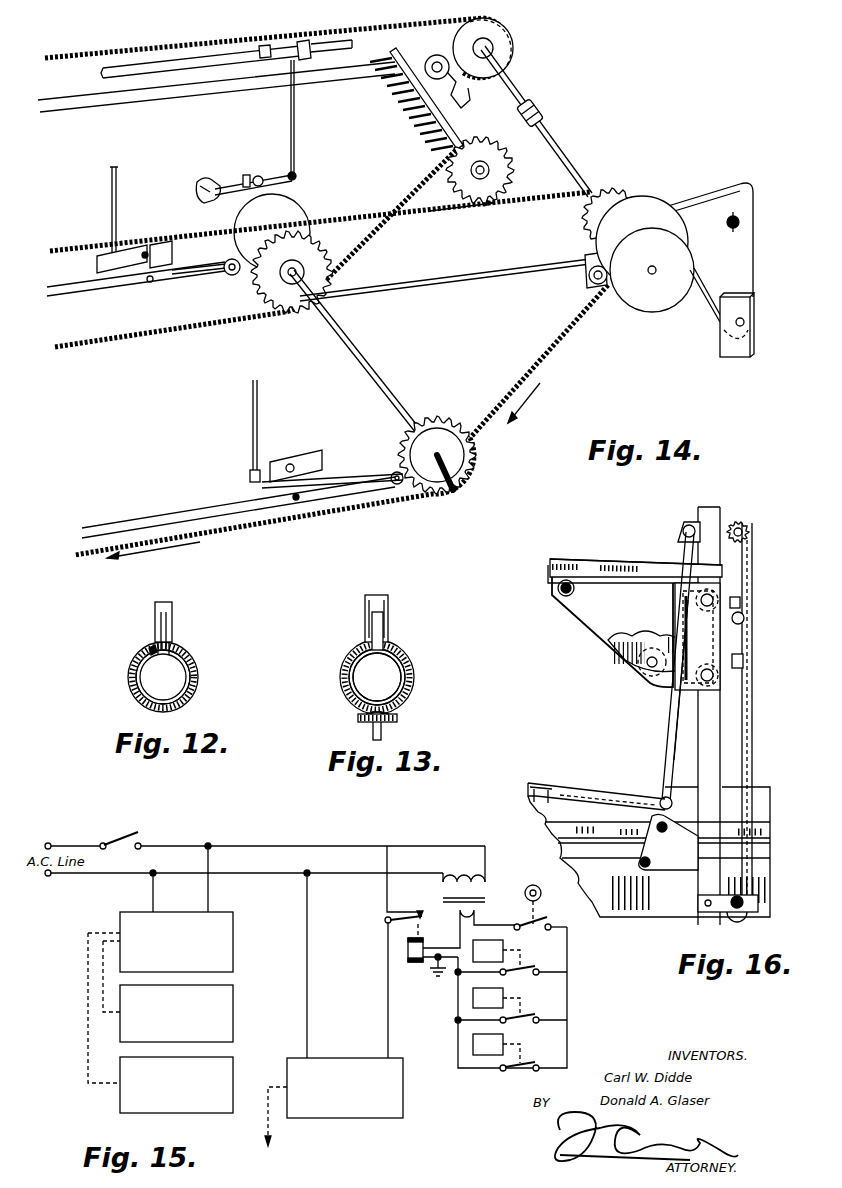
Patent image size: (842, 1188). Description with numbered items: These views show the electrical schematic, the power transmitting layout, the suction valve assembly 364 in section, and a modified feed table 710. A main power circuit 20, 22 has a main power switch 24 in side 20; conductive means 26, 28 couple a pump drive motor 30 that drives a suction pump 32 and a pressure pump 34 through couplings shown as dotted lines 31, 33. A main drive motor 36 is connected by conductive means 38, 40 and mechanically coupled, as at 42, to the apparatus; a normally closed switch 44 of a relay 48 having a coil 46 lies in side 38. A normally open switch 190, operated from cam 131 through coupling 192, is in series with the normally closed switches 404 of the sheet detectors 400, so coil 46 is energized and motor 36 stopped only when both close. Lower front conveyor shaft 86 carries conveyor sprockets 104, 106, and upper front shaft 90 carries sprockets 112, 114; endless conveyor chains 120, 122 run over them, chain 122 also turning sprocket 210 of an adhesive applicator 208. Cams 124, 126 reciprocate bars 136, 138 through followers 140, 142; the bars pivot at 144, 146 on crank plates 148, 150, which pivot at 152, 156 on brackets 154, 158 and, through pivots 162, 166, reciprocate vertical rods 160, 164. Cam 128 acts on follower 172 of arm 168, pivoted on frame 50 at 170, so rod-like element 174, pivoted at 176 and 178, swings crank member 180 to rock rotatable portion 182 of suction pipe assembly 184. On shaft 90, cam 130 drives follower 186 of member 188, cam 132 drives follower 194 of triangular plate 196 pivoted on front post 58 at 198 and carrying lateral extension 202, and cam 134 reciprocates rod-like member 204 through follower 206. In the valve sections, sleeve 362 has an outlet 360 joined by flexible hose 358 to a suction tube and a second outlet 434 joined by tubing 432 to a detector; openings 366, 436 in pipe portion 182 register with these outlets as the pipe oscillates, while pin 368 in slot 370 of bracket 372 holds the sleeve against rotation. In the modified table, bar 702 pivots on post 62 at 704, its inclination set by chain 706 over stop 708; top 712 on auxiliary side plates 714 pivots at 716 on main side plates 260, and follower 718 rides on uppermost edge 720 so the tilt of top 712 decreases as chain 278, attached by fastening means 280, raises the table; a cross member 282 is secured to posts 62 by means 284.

In FIG. 15, the main power circuit side 20 is at (243, 846).
In FIG. 15, the main power circuit side 22 is at (262, 876).
In FIG. 15, the main power switch 24 is at (115, 838).
In FIG. 15, the conductive means 26 is at (208, 891).
In FIG. 15, the conductive means 28 is at (153, 891).
In FIG. 15, the pump drive motor 30 is at (233, 945).
In FIG. 15, the dotted line 31 is at (100, 968).
In FIG. 15, the suction pump 32 is at (233, 1015).
In FIG. 15, the dotted line 33 is at (85, 1041).
In FIG. 15, the pressure pump 34 is at (233, 1085).
In FIG. 15, the main drive motor 36 is at (403, 1088).
In FIG. 15, the conductive means 38 is at (388, 963).
In FIG. 15, the conductive means 40 is at (307, 969).
In FIG. 15, the mechanical coupling 42 is at (265, 1121).
In FIG. 15, the normally closed switch 44 is at (404, 891).
In FIG. 15, the relay coil 46 is at (421, 945).
In FIG. 15, the relay 48 is at (426, 960).
In FIG. 14, the frame 50 is at (200, 184).
In FIG. 16, the frame 50 is at (770, 792).
In FIG. 14, the front post 58 is at (720, 349).
In FIG. 16, the post 62 is at (700, 517).
In FIG. 14, the lower front conveyor shaft 86 is at (362, 355).
In FIG. 14, the upper front shaft 90 is at (565, 152).
In FIG. 14, the conveyor sprocket 104 is at (312, 252).
In FIG. 14, the conveyor sprocket 106 is at (442, 418).
In FIG. 14, the sprocket 112 is at (514, 47).
In FIG. 14, the sprocket 114 is at (612, 190).
In FIG. 14, the endless conveyor chain 120 is at (112, 52).
In FIG. 14, the endless conveyor chain 122 is at (398, 218).
In FIG. 14, the eccentric cam 124 is at (305, 222).
In FIG. 14, the eccentric cam 126 is at (455, 460).
In FIG. 14, the eccentric cam 128 is at (268, 208).
In FIG. 14, the eccentric cam 130 is at (455, 90).
In FIG. 14, the eccentric cam 131 is at (544, 116).
In FIG. 15, the eccentric cam 131 is at (530, 893).
In FIG. 14, the eccentric cam 132 is at (642, 196).
In FIG. 14, the eccentric cam 134 is at (650, 290).
In FIG. 14, the elongated bar 136 is at (78, 290).
In FIG. 14, the elongated bar 138 is at (128, 521).
In FIG. 14, the follower 140 is at (232, 276).
In FIG. 14, the follower 142 is at (389, 470).
In FIG. 14, the pivotal connection 144 is at (153, 282).
In FIG. 14, the pivotal connection 146 is at (300, 500).
In FIG. 14, the crank plate 148 is at (130, 274).
In FIG. 14, the crank plate 150 is at (280, 496).
In FIG. 14, the pivot 152 is at (146, 252).
In FIG. 14, the bracket 154 is at (173, 252).
In FIG. 14, the pivot 156 is at (288, 463).
In FIG. 14, the bracket 158 is at (312, 453).
In FIG. 14, the vertically reciprocable rod 160 is at (118, 180).
In FIG. 14, the pivot 162 is at (110, 257).
In FIG. 14, the vertically reciprocable rod 164 is at (253, 418).
In FIG. 14, the pivot 166 is at (250, 478).
In FIG. 14, the arm 168 is at (246, 176).
In FIG. 14, the pivot 170 is at (212, 180).
In FIG. 14, the follower 172 is at (261, 176).
In FIG. 14, the rod-like element 174 is at (295, 118).
In FIG. 14, the pivotal connection 176 is at (298, 176).
In FIG. 14, the pivotal connection 178 is at (262, 44).
In FIG. 14, the crank member 180 is at (303, 42).
In FIG. 14, the rotatable pipe portion 182 is at (185, 66).
In FIG. 12, the rotatable pipe portion 182 is at (129, 673).
In FIG. 13, the rotatable pipe portion 182 is at (412, 688).
In FIG. 14, the suction pipe assembly 184 is at (340, 44).
In FIG. 14, the follower 186 is at (431, 58).
In FIG. 14, the elongated member 188 is at (150, 98).
In FIG. 15, the electrical switch 190 is at (515, 924).
In FIG. 15, the dotted line 192 is at (546, 919).
In FIG. 14, the follower 194 is at (690, 196).
In FIG. 14, the triangular plate 196 is at (737, 183).
In FIG. 14, the pivot 198 is at (745, 322).
In FIG. 14, the lateral extension 202 is at (740, 222).
In FIG. 14, the rod-like member 204 is at (475, 276).
In FIG. 14, the follower 206 is at (583, 280).
In FIG. 14, the adhesive applicator 208 is at (400, 103).
In FIG. 14, the sprocket 210 is at (510, 169).
In FIG. 16, the main side plate 260 is at (603, 628).
In FIG. 16, the endless chain 278 is at (755, 683).
In FIG. 16, the fastening means 280 is at (735, 661).
In FIG. 16, the cross member 282 is at (745, 620).
In FIG. 16, the securing means 284 is at (740, 605).
In FIG. 13, the flexible hose 358 is at (388, 607).
In FIG. 13, the outlet 360 is at (388, 640).
In FIG. 12, the sleeve 362 is at (197, 668).
In FIG. 13, the sleeve 362 is at (412, 676).
In FIG. 12, the suction valve assembly 364 is at (198, 684).
In FIG. 13, the suction valve assembly 364 is at (352, 650).
In FIG. 13, the elongated opening 366 is at (402, 662).
In FIG. 13, the pin 368 is at (382, 732).
In FIG. 13, the slot 370 is at (397, 718).
In FIG. 13, the bracket 372 is at (366, 720).
In FIG. 15, the sheet detector 400 is at (474, 940).
In FIG. 15, the switch assembly 404 is at (530, 965).
In FIG. 12, the flexible tubing 432 is at (172, 611).
In FIG. 12, the second outlet 434 is at (172, 645).
In FIG. 12, the second elongated opening 436 is at (150, 652).
In FIG. 16, the elongated bar 702 is at (667, 744).
In FIG. 16, the pivot 704 is at (682, 533).
In FIG. 16, the chain 706 is at (585, 790).
In FIG. 16, the stop 708 is at (545, 781).
In FIG. 16, the table assembly 710 is at (577, 560).
In FIG. 16, the top 712 is at (607, 562).
In FIG. 16, the side plate 714 is at (552, 580).
In FIG. 16, the pivot 716 is at (676, 591).
In FIG. 16, the follower 718 is at (645, 670).
In FIG. 16, the uppermost edge 720 is at (669, 715).